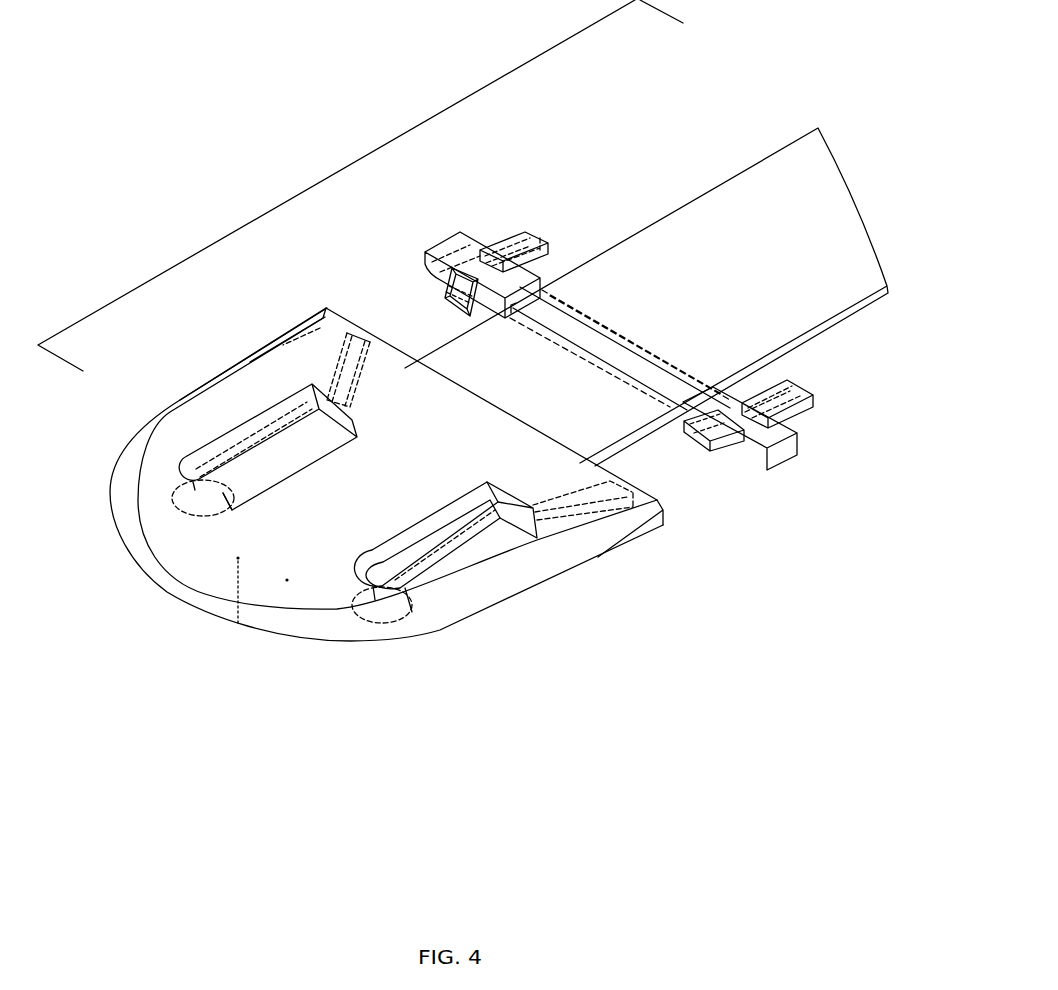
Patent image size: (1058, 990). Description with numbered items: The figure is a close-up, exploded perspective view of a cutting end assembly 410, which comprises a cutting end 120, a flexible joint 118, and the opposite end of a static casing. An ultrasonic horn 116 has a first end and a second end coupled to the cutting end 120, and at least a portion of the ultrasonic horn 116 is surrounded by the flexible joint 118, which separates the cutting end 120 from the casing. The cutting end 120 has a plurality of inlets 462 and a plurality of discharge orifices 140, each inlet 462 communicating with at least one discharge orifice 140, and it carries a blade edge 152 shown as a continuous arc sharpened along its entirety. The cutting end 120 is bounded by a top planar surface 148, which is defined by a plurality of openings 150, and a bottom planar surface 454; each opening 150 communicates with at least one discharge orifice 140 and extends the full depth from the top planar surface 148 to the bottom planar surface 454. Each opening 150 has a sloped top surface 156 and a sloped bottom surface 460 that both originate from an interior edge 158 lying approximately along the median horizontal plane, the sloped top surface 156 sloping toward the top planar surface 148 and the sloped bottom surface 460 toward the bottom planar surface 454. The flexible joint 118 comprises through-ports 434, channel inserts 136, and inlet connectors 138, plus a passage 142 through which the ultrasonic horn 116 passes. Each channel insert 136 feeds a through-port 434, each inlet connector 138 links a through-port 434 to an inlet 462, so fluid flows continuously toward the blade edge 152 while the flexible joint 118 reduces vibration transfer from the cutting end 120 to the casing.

The cutting end assembly 410 is at (353, 140).
The ultrasonic horn 116 is at (793, 200).
The channel insert 136 is at (523, 230).
The through-port 434 is at (463, 247).
The inlet connector 138 is at (448, 287).
The inlet 462 is at (325, 307).
The discharge orifice 140 is at (355, 346).
The sloped top surface 156 is at (245, 432).
The interior edge 158 is at (190, 488).
The blade edge 152 is at (140, 532).
The cutting end 120 is at (126, 605).
The bottom planar surface 454 is at (238, 623).
The top planar surface 148 is at (287, 580).
The sloped bottom surface 460 is at (390, 617).
The opening 150 is at (447, 547).
The passage 142 is at (643, 380).
The flexible joint 118 is at (815, 470).